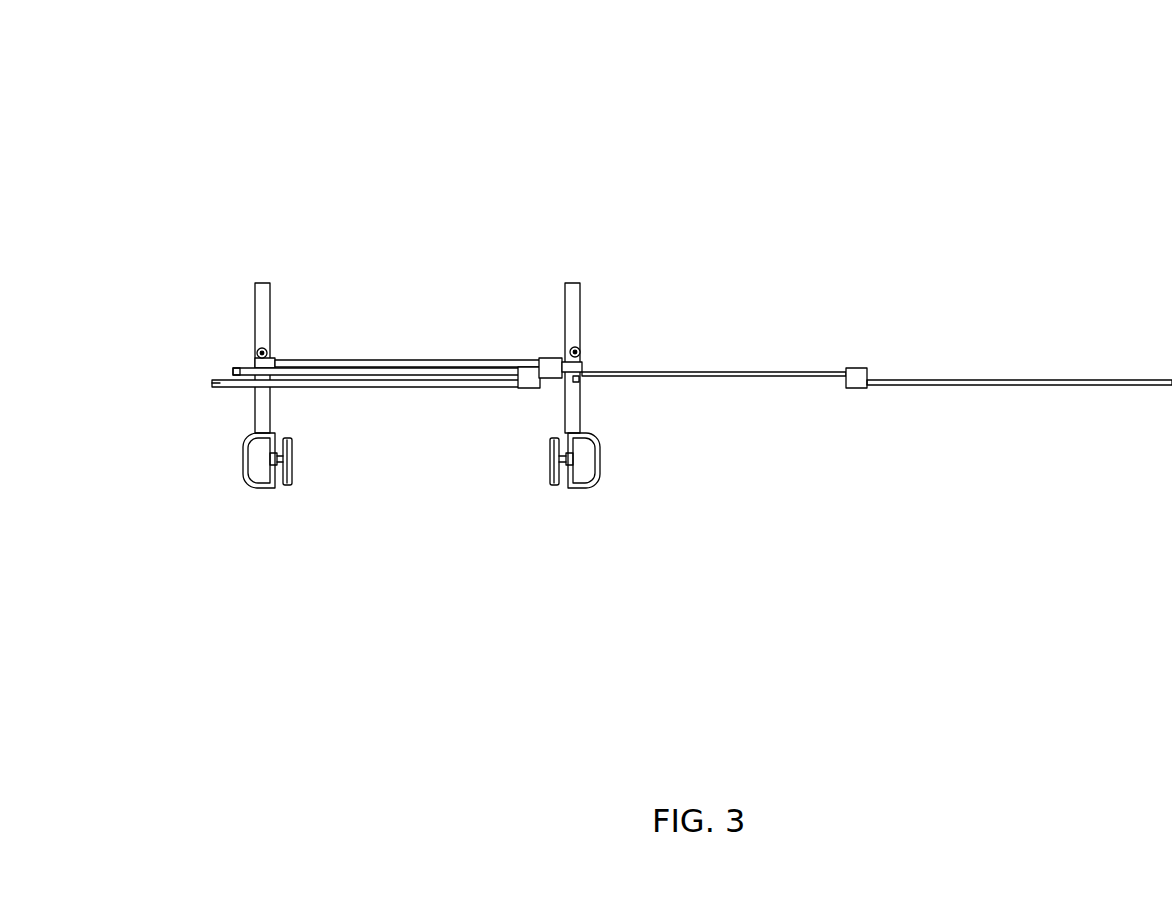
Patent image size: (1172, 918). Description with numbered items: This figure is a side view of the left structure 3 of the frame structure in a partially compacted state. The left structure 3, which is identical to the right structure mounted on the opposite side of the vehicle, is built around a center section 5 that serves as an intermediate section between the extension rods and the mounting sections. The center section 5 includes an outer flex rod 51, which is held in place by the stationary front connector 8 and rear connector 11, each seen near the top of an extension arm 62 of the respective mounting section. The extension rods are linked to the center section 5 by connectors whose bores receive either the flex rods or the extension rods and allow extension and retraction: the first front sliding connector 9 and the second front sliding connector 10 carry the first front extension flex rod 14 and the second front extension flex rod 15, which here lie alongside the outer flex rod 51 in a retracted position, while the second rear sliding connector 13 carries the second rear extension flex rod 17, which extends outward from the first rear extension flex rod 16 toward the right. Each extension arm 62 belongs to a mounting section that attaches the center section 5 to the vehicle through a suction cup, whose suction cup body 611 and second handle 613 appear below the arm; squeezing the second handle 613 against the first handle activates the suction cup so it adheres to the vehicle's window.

The left structure 3 is at (227, 24).
The center section 5 is at (397, 244).
The extension arm 62 is at (263, 285).
The front connector 8 is at (258, 361).
The outer flex rod 51 is at (418, 360).
The first front extension flex rod 14 is at (233, 372).
The second front extension flex rod 15 is at (212, 384).
The first front sliding connector 9 is at (555, 366).
The second front sliding connector 10 is at (527, 390).
The rear connector 11 is at (580, 360).
The second handle 613 is at (247, 488).
The suction cup body 611 is at (287, 487).
The first rear extension flex rod 16 is at (762, 372).
The second rear sliding connector 13 is at (853, 388).
The second rear extension flex rod 17 is at (1087, 382).